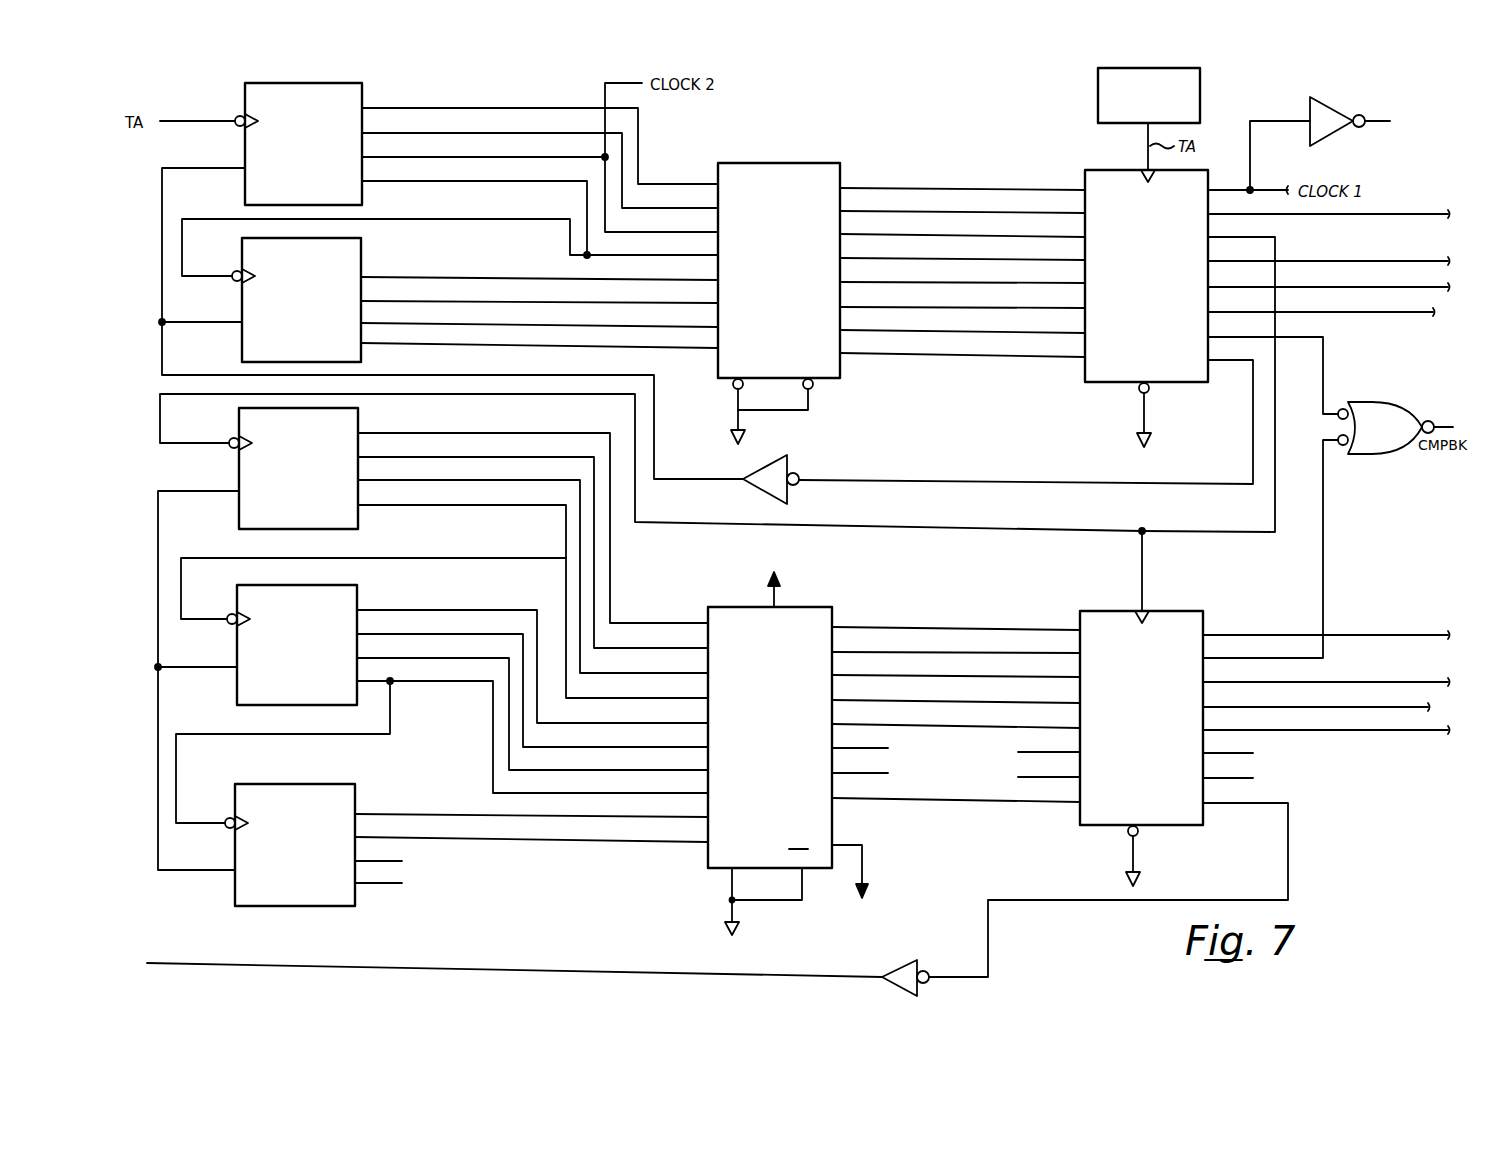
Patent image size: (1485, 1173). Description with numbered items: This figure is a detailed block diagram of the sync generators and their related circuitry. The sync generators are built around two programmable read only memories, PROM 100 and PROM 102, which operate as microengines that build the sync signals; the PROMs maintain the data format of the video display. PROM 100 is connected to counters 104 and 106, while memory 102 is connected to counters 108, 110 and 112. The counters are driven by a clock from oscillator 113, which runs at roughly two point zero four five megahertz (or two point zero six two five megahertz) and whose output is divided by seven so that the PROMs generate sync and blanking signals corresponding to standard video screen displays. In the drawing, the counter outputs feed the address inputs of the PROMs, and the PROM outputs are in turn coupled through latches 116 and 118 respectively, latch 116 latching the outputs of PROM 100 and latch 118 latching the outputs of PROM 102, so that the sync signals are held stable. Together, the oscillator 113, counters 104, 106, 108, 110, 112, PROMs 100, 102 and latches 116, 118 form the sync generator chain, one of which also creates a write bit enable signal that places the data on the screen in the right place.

The programmable read only memory 100 is at (775, 303).
The programmable read only memory 102 is at (777, 745).
The counter 104 is at (299, 144).
The counter 106 is at (298, 300).
The counter 108 is at (295, 468).
The counter 110 is at (293, 645).
The counter 112 is at (291, 845).
The oscillator 113 is at (1200, 88).
The latch 116 is at (1146, 308).
The latch 118 is at (1142, 739).